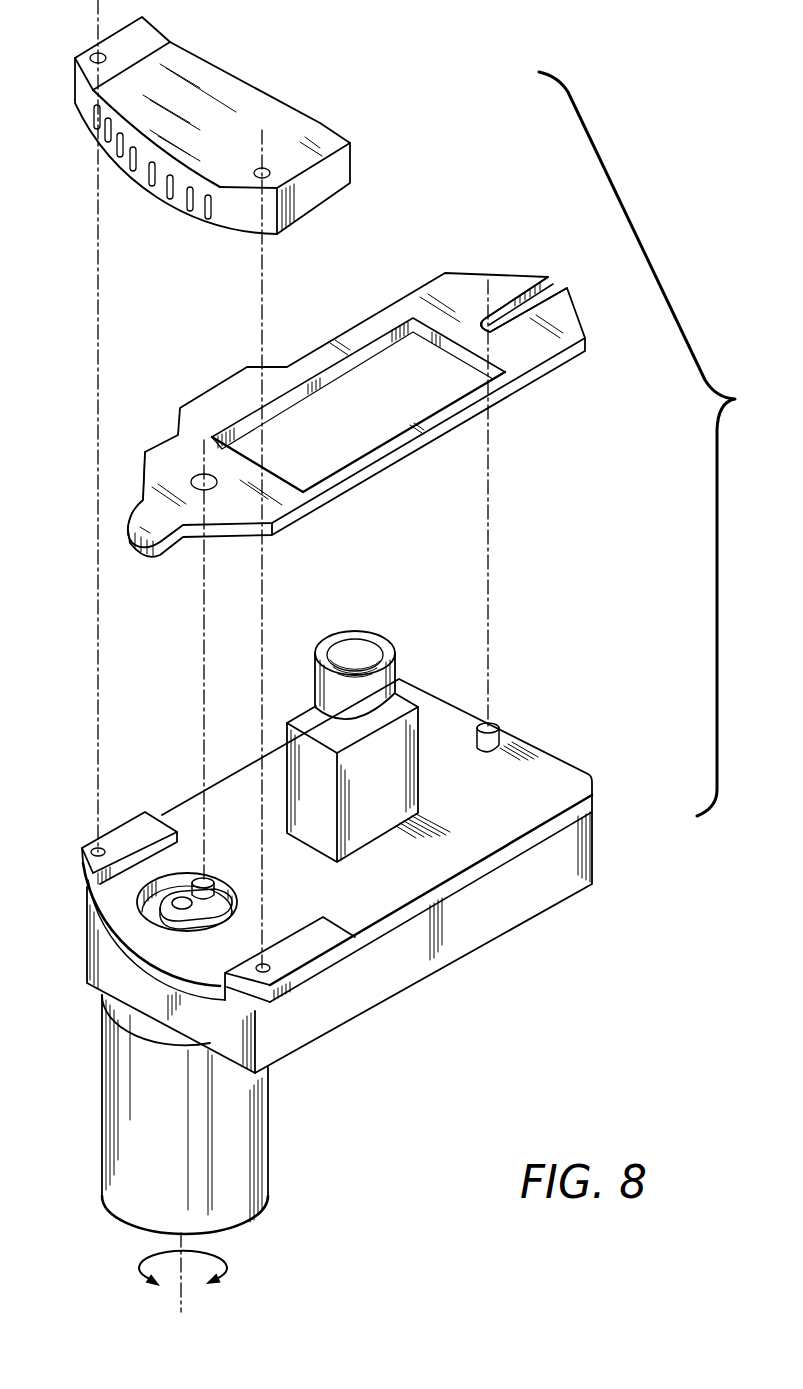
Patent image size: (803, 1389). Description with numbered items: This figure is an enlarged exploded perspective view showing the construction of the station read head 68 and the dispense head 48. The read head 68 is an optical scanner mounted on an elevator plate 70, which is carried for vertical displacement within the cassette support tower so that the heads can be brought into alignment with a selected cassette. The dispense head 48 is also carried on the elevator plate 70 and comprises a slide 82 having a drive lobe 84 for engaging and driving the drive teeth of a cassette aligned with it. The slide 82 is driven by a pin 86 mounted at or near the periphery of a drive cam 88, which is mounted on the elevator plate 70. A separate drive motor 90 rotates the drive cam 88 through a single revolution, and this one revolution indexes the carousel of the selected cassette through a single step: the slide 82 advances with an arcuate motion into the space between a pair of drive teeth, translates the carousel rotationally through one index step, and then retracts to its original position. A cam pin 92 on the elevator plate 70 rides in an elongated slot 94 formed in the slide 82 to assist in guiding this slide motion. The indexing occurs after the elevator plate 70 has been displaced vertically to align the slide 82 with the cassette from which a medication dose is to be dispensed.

The dispense head 48 is at (422, 264).
The station read head 68 is at (217, 117).
The elevator plate 70 is at (452, 930).
The slide 82 is at (527, 383).
The drive lobe 84 is at (161, 550).
The pin 86 is at (204, 882).
The drive cam 88 is at (207, 912).
The drive motor 90 is at (232, 1152).
The cam pin 92 is at (501, 739).
The elongated slot 94 is at (553, 292).